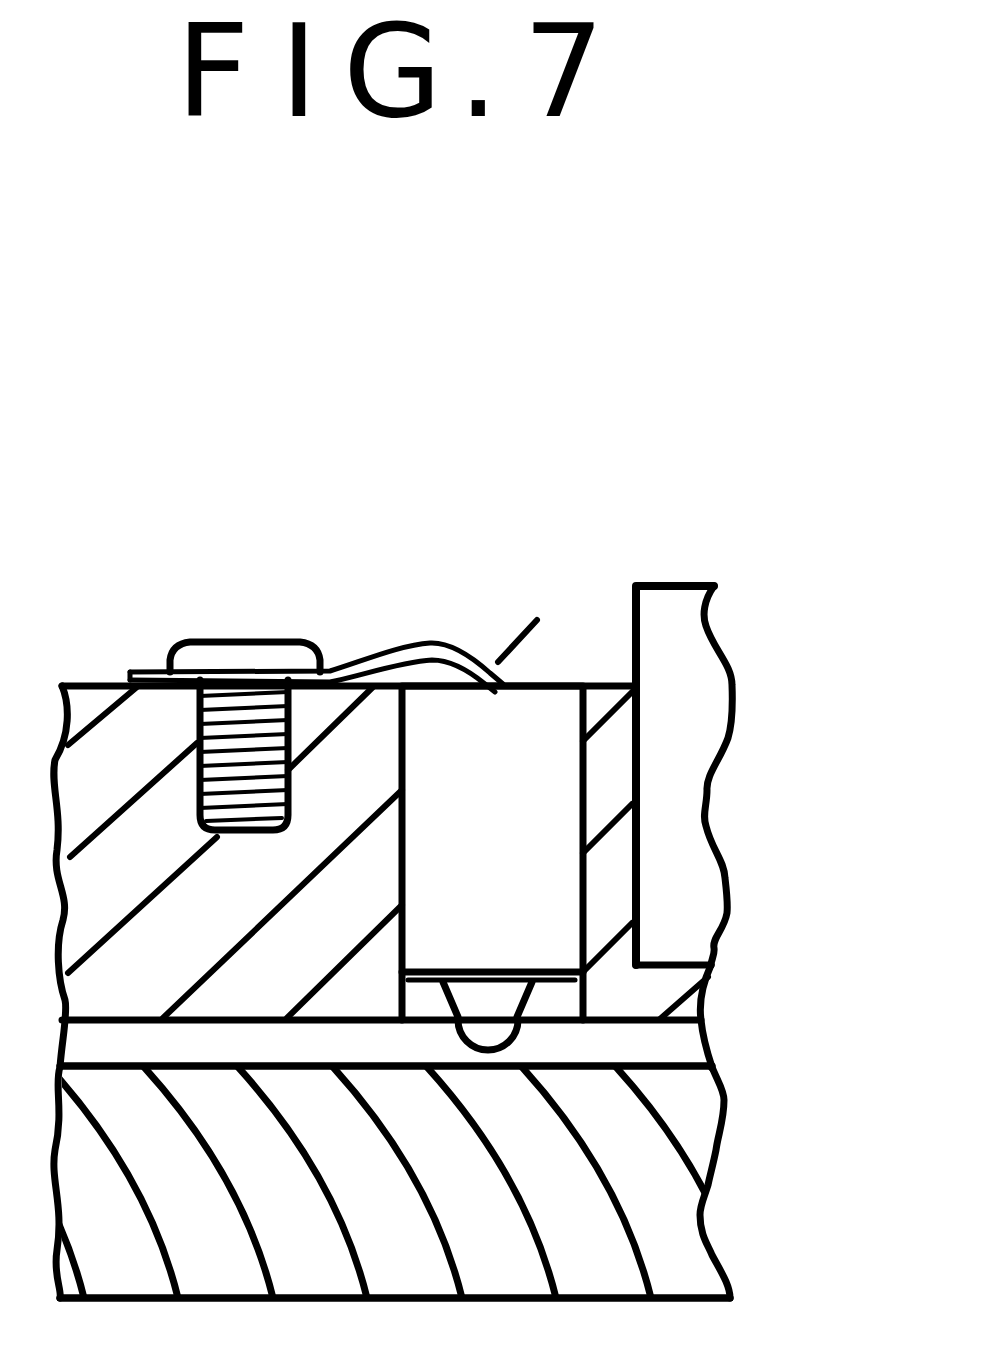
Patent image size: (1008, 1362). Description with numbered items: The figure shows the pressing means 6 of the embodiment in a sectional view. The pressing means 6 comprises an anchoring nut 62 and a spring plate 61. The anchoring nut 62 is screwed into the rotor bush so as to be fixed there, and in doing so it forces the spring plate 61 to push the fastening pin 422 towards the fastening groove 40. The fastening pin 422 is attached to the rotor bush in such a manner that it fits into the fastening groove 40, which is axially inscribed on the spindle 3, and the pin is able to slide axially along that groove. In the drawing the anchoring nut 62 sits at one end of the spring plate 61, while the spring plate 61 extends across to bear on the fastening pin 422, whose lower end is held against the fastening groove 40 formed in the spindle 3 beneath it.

The spindle 3 is at (682, 1175).
The fastening groove 40 is at (675, 1043).
The fastening pin 422 is at (530, 733).
The pressing means 6 is at (455, 470).
The spring plate 61 is at (433, 642).
The anchoring nut 62 is at (248, 648).